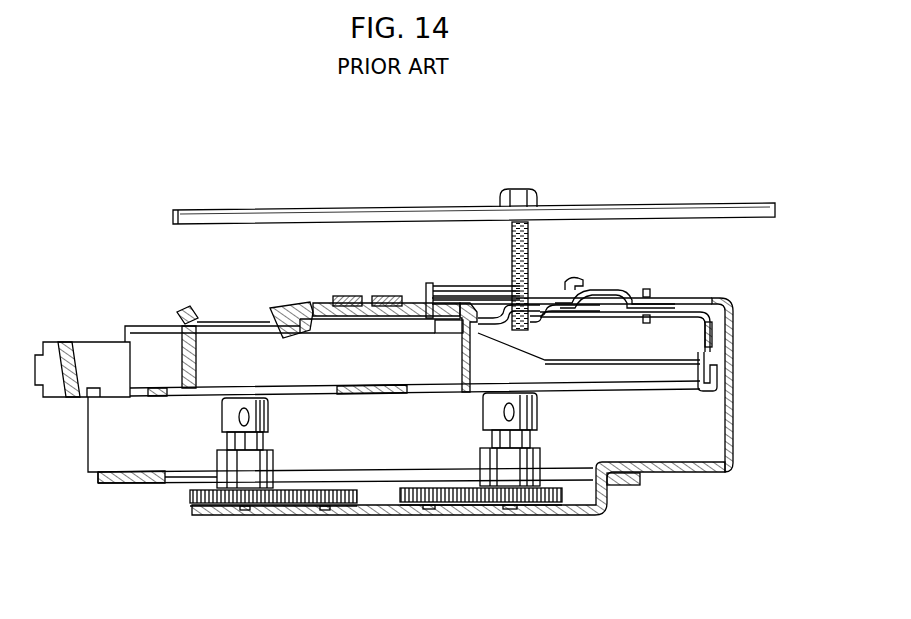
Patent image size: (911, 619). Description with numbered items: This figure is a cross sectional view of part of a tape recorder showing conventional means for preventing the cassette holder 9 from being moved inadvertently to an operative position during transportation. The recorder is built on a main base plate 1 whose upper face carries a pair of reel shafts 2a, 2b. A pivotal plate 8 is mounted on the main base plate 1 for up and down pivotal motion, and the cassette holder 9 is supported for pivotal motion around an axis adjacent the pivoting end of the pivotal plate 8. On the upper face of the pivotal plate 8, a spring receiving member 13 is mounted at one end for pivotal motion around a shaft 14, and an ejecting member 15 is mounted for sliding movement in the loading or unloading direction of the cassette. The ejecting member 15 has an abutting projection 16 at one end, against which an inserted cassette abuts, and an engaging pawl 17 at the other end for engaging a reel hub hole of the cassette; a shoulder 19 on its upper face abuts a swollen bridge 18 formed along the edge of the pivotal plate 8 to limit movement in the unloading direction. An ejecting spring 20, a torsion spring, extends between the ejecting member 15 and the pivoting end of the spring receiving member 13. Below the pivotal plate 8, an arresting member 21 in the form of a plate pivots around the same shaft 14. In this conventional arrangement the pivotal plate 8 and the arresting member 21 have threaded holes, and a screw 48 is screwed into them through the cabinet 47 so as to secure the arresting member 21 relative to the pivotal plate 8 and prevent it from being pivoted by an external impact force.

The main base plate 1 is at (680, 473).
The reel shaft 2a is at (268, 415).
The reel shaft 2b is at (535, 410).
The pivotal plate 8 is at (733, 315).
The cassette holder 9 is at (717, 365).
The spring receiving member 13 is at (610, 292).
The shaft 14 is at (648, 289).
The ejecting member 15 is at (362, 318).
The abutting projection 16 is at (462, 370).
The engaging pawl 17 is at (287, 338).
The swollen bridge 18 is at (380, 296).
The shoulder 19 is at (413, 296).
The ejecting spring 20 is at (478, 290).
The arresting member 21 is at (630, 318).
The cabinet 47 is at (615, 200).
The screw 48 is at (512, 190).